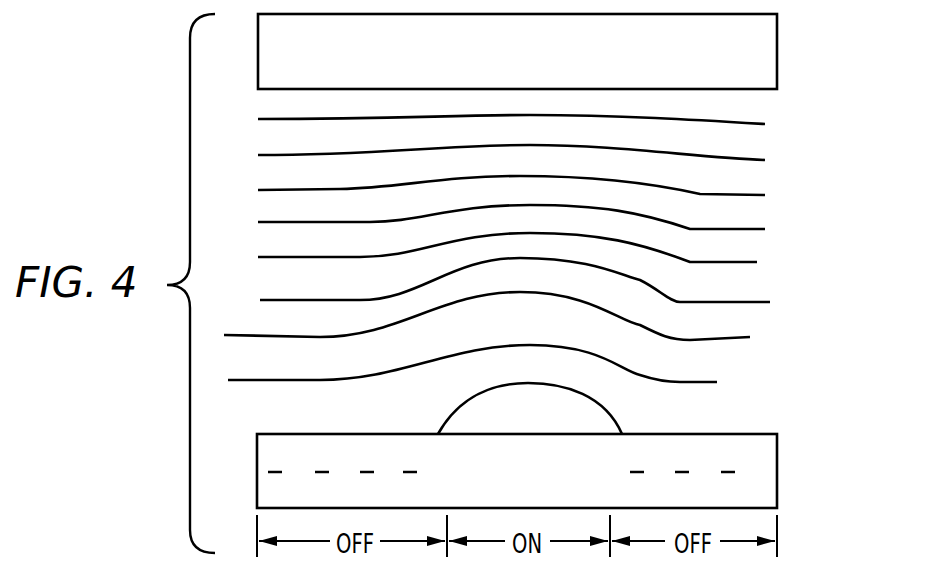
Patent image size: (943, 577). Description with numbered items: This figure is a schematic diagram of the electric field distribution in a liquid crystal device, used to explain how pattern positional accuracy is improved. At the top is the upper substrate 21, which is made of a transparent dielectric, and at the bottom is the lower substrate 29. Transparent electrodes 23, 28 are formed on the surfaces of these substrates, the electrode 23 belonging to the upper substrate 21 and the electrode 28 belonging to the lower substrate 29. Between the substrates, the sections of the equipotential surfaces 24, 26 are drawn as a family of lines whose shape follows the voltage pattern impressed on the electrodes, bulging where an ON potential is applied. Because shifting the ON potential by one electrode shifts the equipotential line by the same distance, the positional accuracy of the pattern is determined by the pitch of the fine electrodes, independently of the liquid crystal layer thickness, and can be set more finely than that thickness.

The upper substrate 21 is at (777, 52).
The transparent electrode 23 is at (768, 90).
The equipotential surface section 24 is at (757, 143).
The equipotential surface section 26 is at (770, 302).
The transparent electrode 28 is at (747, 435).
The lower substrate 29 is at (777, 475).